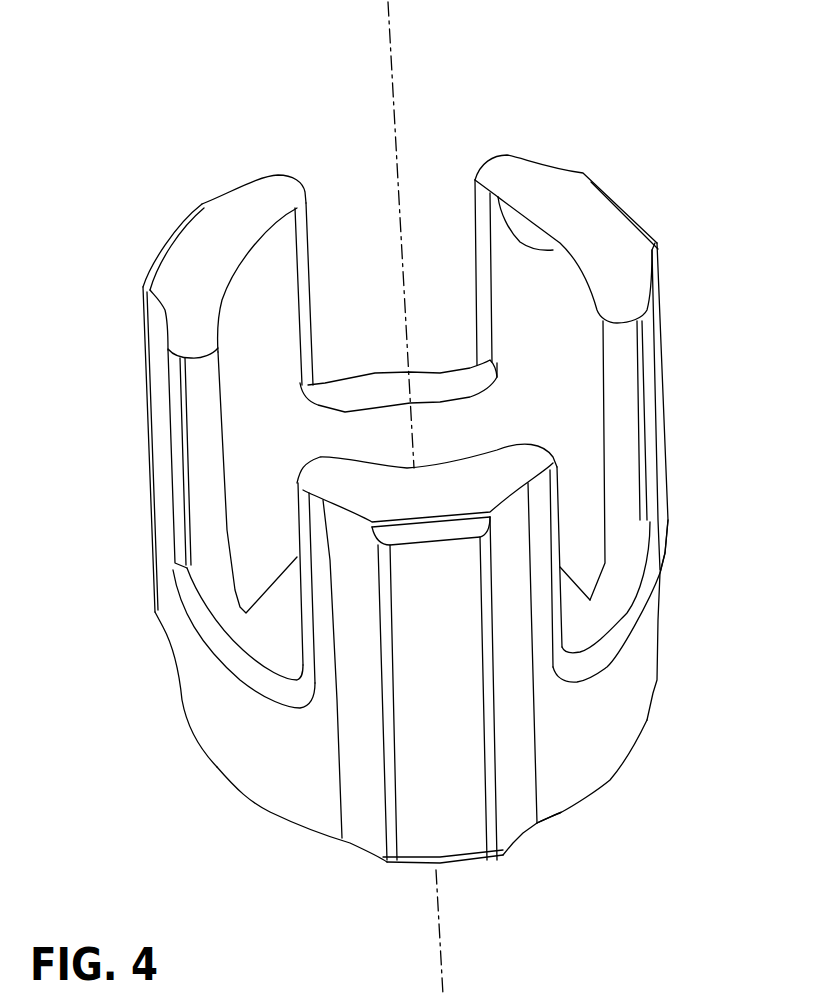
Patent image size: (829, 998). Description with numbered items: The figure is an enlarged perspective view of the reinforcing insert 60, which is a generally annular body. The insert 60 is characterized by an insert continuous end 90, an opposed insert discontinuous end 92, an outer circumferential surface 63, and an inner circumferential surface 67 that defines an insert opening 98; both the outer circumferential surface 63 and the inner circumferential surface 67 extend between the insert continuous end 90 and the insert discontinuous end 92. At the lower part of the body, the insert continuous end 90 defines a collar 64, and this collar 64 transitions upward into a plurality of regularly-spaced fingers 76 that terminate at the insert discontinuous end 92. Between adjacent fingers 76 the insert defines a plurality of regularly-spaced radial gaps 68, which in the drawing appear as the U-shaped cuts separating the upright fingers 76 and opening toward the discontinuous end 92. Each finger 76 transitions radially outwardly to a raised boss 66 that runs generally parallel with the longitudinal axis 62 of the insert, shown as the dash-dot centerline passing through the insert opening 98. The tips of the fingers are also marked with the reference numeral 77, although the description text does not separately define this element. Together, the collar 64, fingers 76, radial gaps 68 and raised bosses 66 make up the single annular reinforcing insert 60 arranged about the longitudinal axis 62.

The reinforcing insert 60 is at (700, 213).
The longitudinal axis 62 is at (390, 113).
The outer circumferential surface 63 is at (243, 733).
The collar 64 is at (644, 731).
The raised boss 66 is at (147, 462).
The inner circumferential surface 67 is at (498, 197).
The radial gaps 68 is at (350, 323).
The fingers 76 is at (672, 461).
The finger tips 77 is at (198, 247).
The insert continuous end 90 is at (250, 802).
The insert discontinuous end 92 is at (235, 198).
The insert opening 98 is at (363, 453).